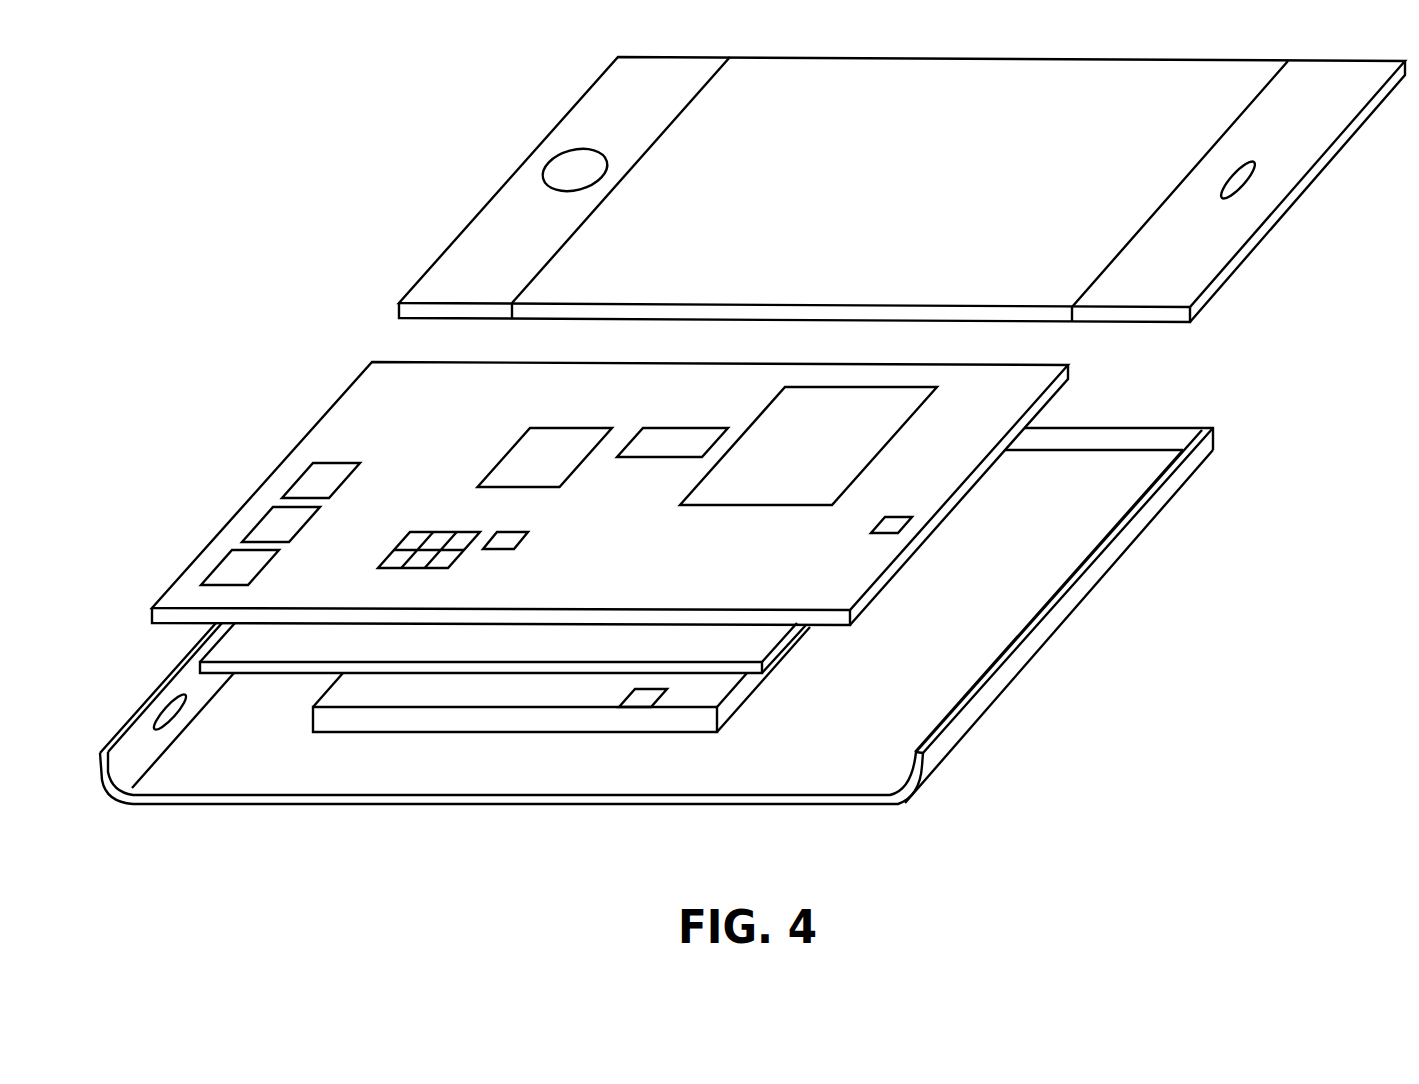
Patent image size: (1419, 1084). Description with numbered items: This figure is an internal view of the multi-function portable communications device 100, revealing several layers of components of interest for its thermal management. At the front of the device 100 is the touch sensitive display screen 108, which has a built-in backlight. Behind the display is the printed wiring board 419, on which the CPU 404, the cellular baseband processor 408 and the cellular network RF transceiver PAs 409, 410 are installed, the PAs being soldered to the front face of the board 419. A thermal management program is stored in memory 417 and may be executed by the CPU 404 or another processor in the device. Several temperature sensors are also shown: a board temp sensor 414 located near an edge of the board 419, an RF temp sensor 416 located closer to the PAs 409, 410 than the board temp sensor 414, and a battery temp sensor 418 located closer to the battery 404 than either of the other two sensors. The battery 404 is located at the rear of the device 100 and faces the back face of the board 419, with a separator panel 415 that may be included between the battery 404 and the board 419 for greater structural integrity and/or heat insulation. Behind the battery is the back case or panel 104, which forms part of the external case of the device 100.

The multi-function portable communications device 100 is at (99, 871).
The back case or panel 104 is at (742, 805).
The touch sensitive display screen 108 is at (1038, 290).
The CPU / battery 404 is at (743, 507).
The cellular baseband processor 408 is at (555, 427).
The cellular network RF transceiver PA 409 is at (487, 521).
The cellular network RF transceiver PA 410 is at (255, 593).
The board temp sensor 414 is at (900, 525).
The separator panel 415 is at (797, 648).
The RF temp sensor 416 is at (520, 538).
The memory 417 is at (675, 423).
The battery temp sensor 418 is at (648, 700).
The printed wiring board 419 is at (1043, 402).